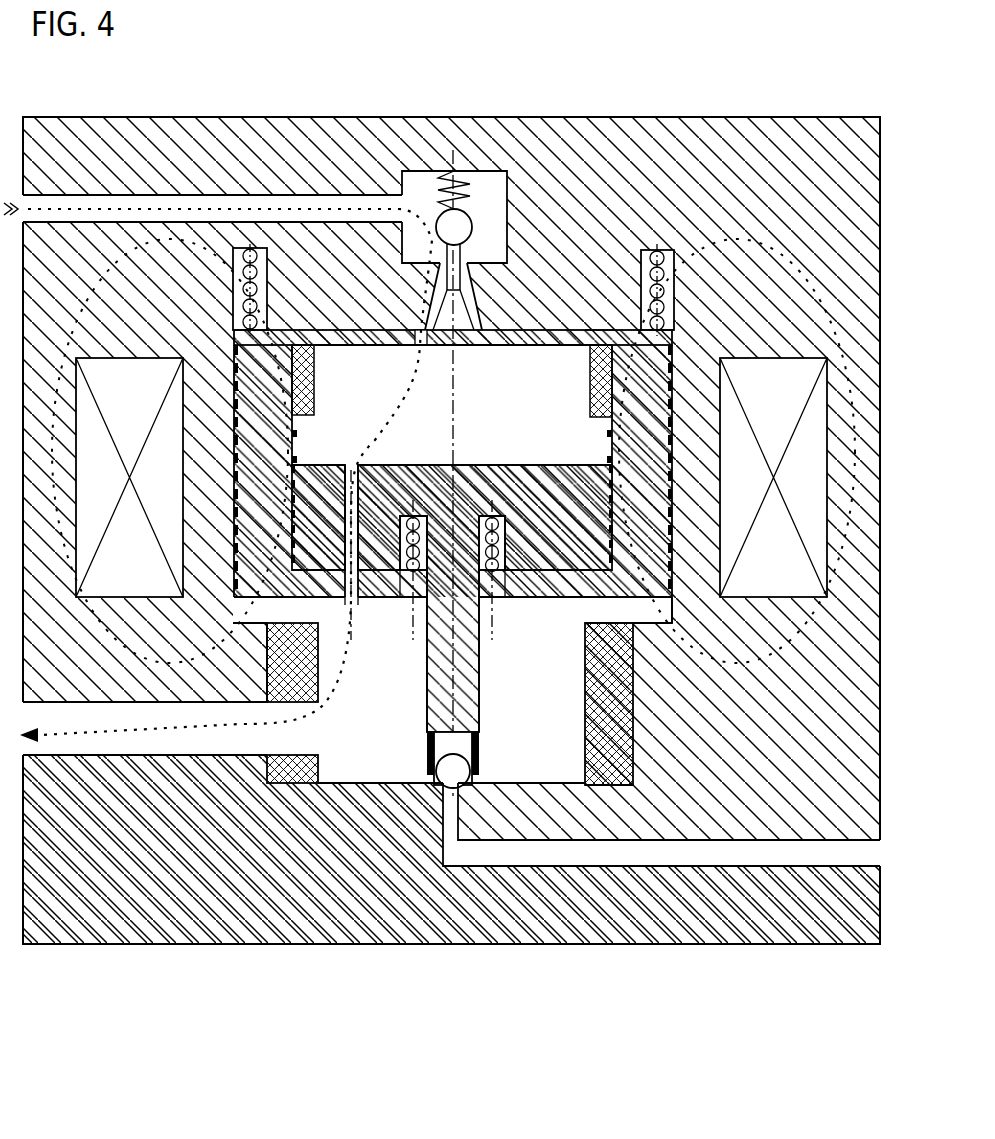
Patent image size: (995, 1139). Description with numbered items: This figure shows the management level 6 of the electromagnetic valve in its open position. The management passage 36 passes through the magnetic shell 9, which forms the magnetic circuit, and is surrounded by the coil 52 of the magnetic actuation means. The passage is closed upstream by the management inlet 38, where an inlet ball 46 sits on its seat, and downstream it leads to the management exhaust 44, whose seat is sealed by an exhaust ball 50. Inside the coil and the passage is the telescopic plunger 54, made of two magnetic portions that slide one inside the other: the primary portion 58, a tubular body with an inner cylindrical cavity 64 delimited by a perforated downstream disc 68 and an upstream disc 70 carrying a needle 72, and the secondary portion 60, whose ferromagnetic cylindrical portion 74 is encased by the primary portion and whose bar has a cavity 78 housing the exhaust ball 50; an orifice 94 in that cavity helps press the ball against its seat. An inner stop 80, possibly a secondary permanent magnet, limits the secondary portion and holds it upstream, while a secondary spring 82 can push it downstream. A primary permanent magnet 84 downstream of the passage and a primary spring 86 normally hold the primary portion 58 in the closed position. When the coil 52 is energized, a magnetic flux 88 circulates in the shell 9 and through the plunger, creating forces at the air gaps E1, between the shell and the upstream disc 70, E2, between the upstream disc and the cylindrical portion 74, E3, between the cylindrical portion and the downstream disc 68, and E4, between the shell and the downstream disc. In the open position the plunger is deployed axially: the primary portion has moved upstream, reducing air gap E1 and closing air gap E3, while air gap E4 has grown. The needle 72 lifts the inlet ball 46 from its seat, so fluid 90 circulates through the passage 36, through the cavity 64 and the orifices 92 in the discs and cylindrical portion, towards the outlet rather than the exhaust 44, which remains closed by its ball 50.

The management level 6 is at (243, 999).
The magnetic shell 9 is at (725, 743).
The management passage 36 is at (346, 771).
The management inlet 38 is at (478, 311).
The management exhaust 44 is at (446, 809).
The inlet ball 46 is at (471, 224).
The exhaust ball 50 is at (471, 772).
The coil 52 is at (116, 586).
The plunger 54 is at (690, 610).
The primary portion 58 is at (376, 628).
The secondary portion 60 is at (436, 438).
The inner cylindrical cavity 64 is at (329, 418).
The downstream disc 68 is at (524, 599).
The upstream disc 70 is at (328, 340).
The needle 72 is at (500, 264).
The cylindrical portion 74 is at (421, 498).
The cavity 78 is at (467, 742).
The inner stop 80 is at (589, 375).
The secondary spring 82 is at (497, 536).
The primary permanent magnet 84 is at (268, 784).
The primary spring 86 is at (675, 277).
The magnetic flux 88 is at (163, 243).
The fluid circulation 90 is at (280, 724).
The orifices 92 is at (422, 347).
The orifice 94 is at (431, 744).
The air gap E1 is at (598, 330).
The air gap E2 is at (526, 423).
The air gap E3 is at (567, 578).
The air gap E4 is at (433, 635).